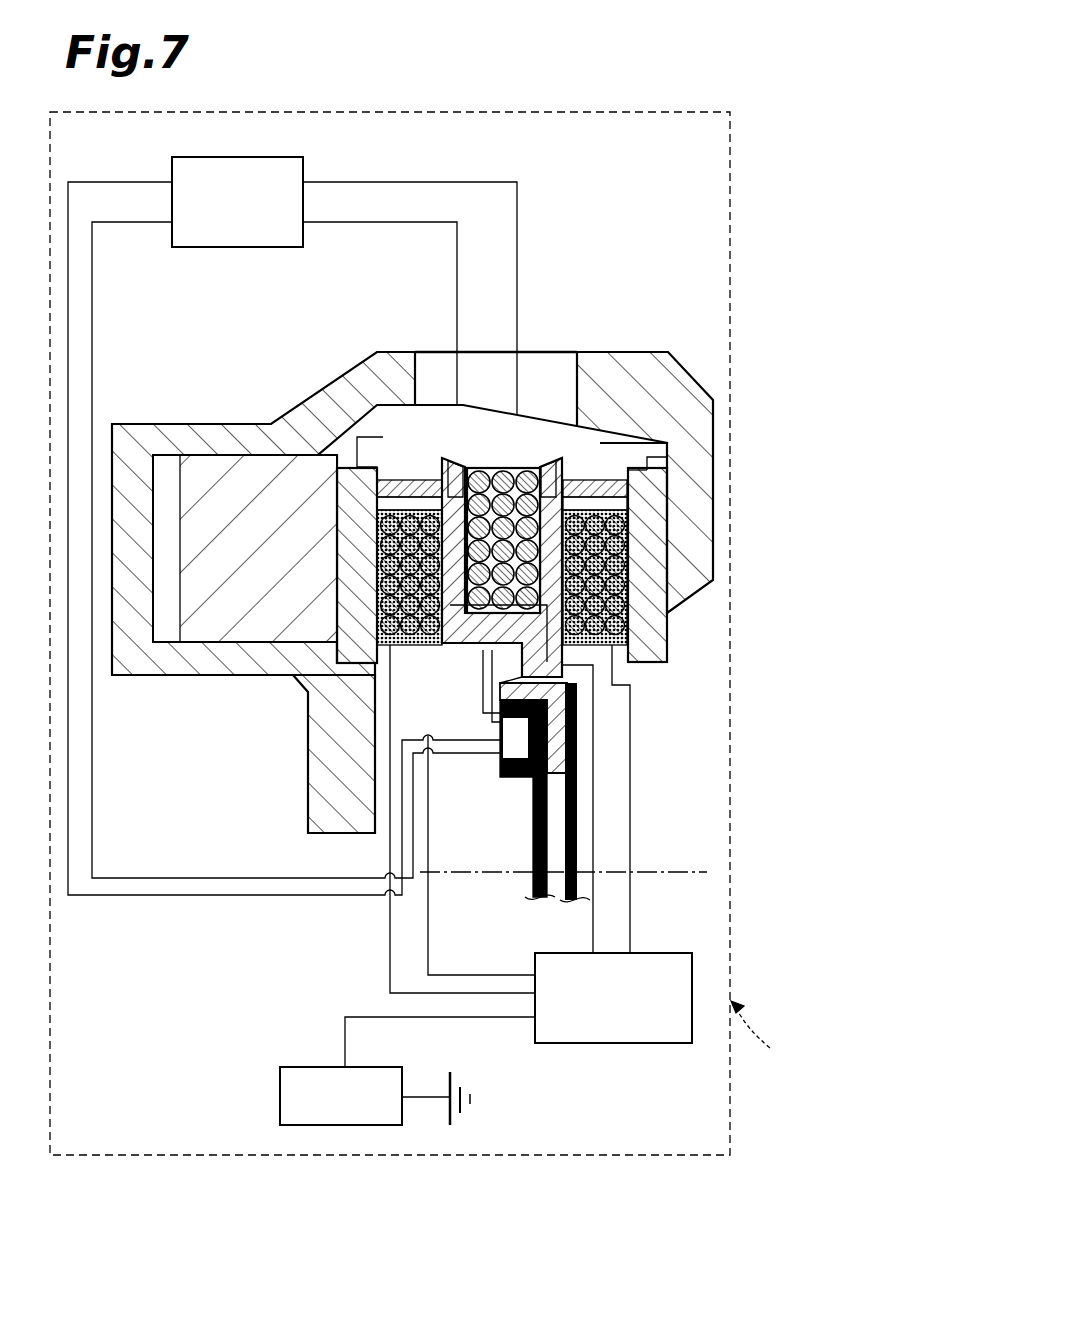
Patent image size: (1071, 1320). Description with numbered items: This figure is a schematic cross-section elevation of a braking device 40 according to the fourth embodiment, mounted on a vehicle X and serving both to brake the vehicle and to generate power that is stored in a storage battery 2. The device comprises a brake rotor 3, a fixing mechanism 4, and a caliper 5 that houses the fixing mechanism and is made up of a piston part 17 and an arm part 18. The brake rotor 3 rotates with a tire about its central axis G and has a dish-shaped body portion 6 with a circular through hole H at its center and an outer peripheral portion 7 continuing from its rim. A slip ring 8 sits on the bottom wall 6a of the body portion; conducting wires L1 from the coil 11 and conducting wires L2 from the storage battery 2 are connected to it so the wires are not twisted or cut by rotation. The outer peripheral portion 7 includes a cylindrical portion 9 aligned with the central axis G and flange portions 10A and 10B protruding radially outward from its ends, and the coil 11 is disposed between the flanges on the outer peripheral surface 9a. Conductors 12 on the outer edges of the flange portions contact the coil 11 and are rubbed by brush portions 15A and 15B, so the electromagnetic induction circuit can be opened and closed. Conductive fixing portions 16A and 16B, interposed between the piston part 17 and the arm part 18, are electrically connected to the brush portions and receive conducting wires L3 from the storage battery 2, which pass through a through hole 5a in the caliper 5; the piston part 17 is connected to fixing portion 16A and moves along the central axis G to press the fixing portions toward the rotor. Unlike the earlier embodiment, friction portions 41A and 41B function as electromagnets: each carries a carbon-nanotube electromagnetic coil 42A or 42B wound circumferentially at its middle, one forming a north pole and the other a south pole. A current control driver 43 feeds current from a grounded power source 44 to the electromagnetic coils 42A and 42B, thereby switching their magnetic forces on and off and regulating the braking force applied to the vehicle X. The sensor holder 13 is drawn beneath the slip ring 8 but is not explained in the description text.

The storage battery 2 is at (224, 157).
The braking device 40 is at (736, 92).
The brake rotor 3 is at (662, 668).
The fixing mechanism 4 is at (407, 456).
The caliper 5 is at (634, 350).
The through hole 5a is at (575, 368).
The body portion 6 is at (594, 764).
The bottom wall 6a is at (555, 720).
The outer peripheral portion 7 is at (574, 653).
The slip ring 8 is at (512, 760).
The cylindrical portion 9 is at (617, 645).
The outer peripheral surface 9a is at (487, 608).
The flange portion 10A is at (452, 452).
The flange portion 10B is at (578, 463).
The coil 11 is at (535, 535).
The conductor 12 is at (543, 458).
The sensor holder 13 is at (533, 848).
The brush portion 15A is at (392, 470).
The brush portion 15B is at (606, 470).
The fixing portion 16A is at (342, 582).
The fixing portion 16B is at (652, 503).
The piston part 17 is at (212, 492).
The arm part 18 is at (703, 458).
The friction portion 41A is at (403, 652).
The friction portion 41B is at (634, 610).
The electromagnetic coil 42A is at (378, 525).
The electromagnetic coil 42B is at (620, 582).
The current control driver 43 is at (650, 1045).
The power source 44 is at (280, 1092).
The through hole H is at (553, 777).
The central axis G is at (686, 860).
The conducting wires L1 is at (483, 698).
The conducting wires L2 is at (413, 860).
The conducting wires L3 is at (458, 270).
The vehicle X is at (762, 1037).